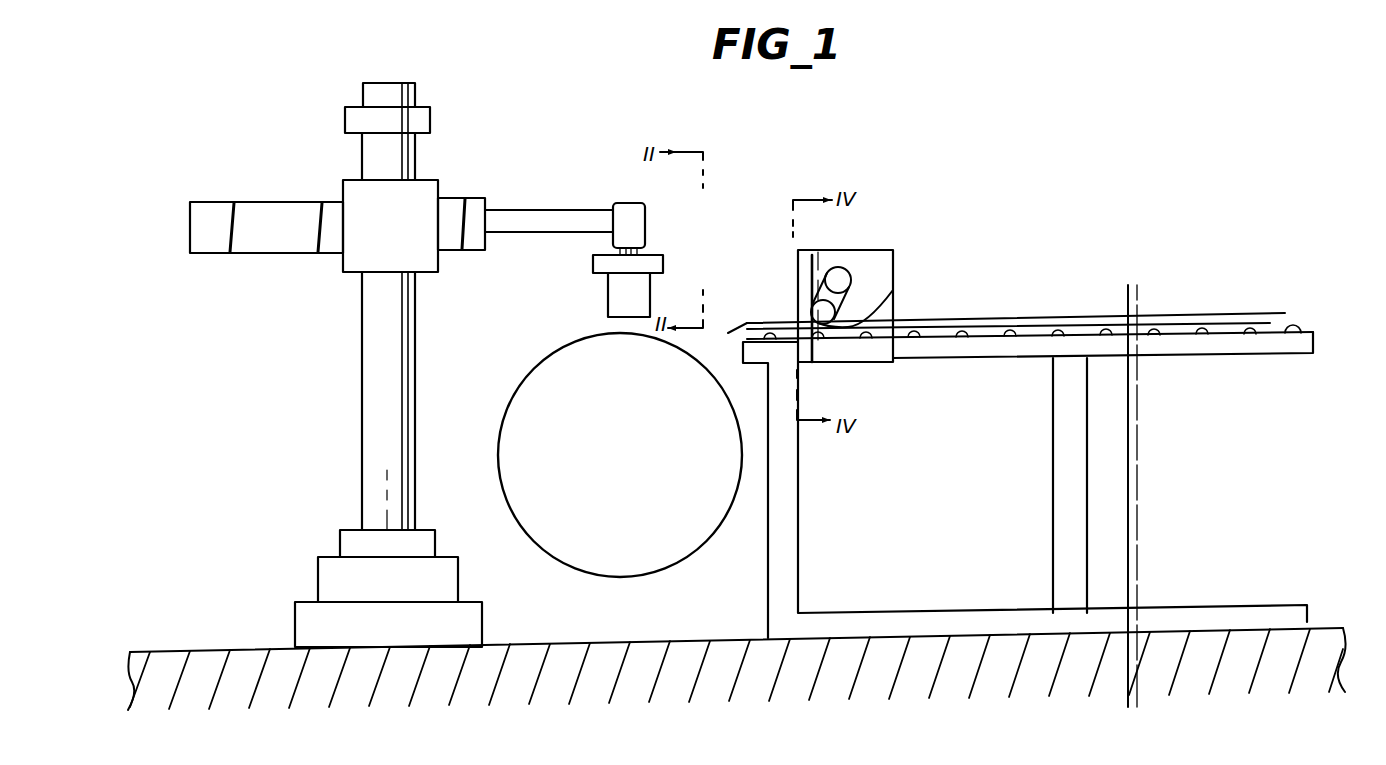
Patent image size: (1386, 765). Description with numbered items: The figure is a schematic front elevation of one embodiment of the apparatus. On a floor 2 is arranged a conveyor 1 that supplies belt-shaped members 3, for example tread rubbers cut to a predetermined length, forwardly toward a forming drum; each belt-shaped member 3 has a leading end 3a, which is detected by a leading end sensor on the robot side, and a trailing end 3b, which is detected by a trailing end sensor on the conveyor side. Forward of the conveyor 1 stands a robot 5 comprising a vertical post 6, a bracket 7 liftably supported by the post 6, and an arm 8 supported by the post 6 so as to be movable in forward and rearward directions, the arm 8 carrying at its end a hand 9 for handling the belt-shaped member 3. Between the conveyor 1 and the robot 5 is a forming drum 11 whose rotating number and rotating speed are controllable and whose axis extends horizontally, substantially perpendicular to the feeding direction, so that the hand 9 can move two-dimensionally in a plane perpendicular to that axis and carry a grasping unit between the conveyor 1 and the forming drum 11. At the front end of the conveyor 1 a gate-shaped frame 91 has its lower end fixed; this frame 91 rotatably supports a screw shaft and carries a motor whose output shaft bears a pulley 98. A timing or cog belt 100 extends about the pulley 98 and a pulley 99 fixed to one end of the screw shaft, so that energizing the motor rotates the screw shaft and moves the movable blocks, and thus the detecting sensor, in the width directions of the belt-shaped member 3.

The conveyor 1 is at (958, 362).
The floor 2 is at (735, 645).
The belt-shaped member 3 is at (1040, 320).
The leading end 3a is at (731, 333).
The trailing end 3b is at (1284, 319).
The robot 5 is at (302, 189).
The vertical post 6 is at (371, 405).
The bracket 7 is at (353, 258).
The arm 8 is at (553, 220).
The hand 9 is at (592, 273).
The forming drum 11 is at (516, 394).
The gate-shaped frame 91 is at (878, 250).
The pulley 98 is at (842, 268).
The pulley 99 is at (828, 324).
The timing belt 100 is at (893, 290).